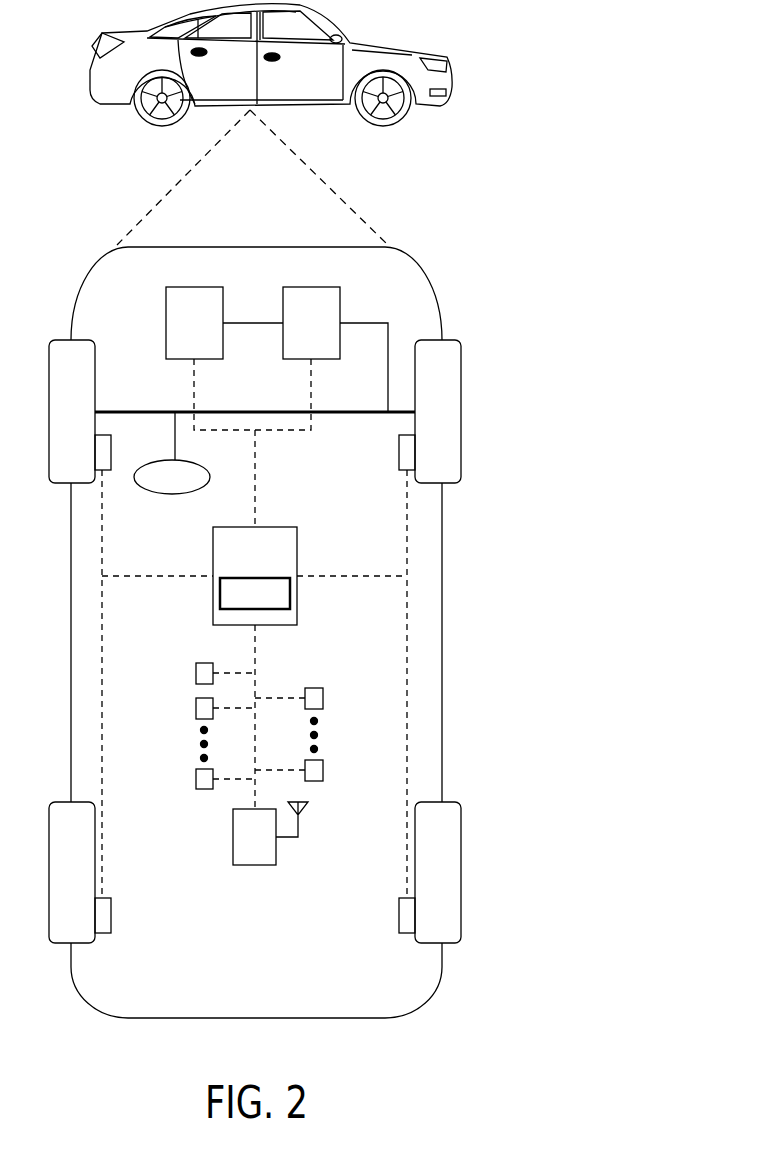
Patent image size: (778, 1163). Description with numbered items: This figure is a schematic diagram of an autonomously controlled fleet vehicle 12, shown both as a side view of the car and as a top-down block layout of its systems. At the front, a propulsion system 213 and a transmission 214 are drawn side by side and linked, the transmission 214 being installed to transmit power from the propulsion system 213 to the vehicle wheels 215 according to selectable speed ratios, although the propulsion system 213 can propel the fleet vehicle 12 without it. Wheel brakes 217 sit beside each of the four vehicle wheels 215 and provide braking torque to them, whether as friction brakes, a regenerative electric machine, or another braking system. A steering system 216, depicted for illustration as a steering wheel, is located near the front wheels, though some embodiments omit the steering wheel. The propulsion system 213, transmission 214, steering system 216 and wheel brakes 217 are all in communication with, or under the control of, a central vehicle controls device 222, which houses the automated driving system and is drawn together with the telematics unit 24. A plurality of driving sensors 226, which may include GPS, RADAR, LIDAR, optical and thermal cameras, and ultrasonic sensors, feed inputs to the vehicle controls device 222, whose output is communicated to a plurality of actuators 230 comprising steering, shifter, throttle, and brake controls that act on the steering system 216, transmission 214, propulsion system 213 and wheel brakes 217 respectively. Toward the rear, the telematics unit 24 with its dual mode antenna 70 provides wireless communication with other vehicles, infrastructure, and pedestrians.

The fleet vehicle 12 is at (90, 78).
The propulsion system 213 is at (166, 320).
The transmission 214 is at (340, 300).
The vehicle wheels 215 is at (97, 392).
The steering system 216 is at (172, 495).
The wheel brakes 217 is at (112, 458).
The vehicle controls device 222 is at (298, 585).
The telematics unit 24 is at (275, 612).
The driving sensors 226 is at (195, 673).
The actuators 230 is at (323, 697).
The dual mode antenna 70 is at (300, 830).